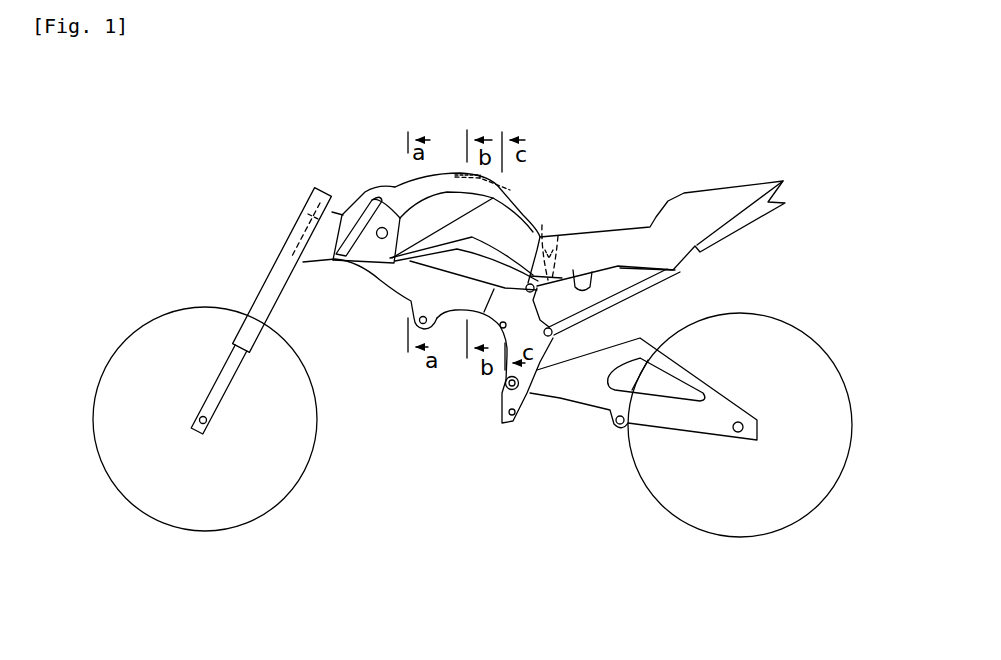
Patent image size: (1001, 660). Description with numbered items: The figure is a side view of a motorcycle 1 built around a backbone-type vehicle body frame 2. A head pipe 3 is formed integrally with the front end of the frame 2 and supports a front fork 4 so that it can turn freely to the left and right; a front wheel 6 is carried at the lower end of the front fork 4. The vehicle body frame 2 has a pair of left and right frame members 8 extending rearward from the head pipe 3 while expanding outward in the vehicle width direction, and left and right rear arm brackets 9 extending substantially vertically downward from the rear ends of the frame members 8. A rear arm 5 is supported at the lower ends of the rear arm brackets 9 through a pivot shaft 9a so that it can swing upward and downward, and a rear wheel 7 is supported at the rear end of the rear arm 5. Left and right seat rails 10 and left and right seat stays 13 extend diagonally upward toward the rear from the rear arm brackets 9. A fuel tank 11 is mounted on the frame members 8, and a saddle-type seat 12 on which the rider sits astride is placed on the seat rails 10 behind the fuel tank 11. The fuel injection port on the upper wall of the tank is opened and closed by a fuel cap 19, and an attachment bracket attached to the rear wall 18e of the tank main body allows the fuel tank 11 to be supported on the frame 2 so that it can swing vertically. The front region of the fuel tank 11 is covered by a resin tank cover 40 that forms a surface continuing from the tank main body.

The motorcycle 1 is at (235, 152).
The vehicle body frame 2 is at (376, 290).
The head pipe 3 is at (306, 212).
The front fork 4 is at (262, 295).
The rear arm 5 is at (592, 410).
The front wheel 6 is at (293, 487).
The rear wheel 7 is at (816, 340).
The frame member 8 is at (458, 313).
The rear arm bracket 9 is at (527, 393).
The pivot shaft 9a is at (505, 388).
The seat rail 10 is at (573, 270).
The fuel tank 11 is at (438, 172).
The seat 12 is at (620, 228).
The seat stay 13 is at (622, 297).
The rear wall 18e is at (545, 240).
The fuel cap 19 is at (510, 190).
The tank cover 40 is at (363, 192).